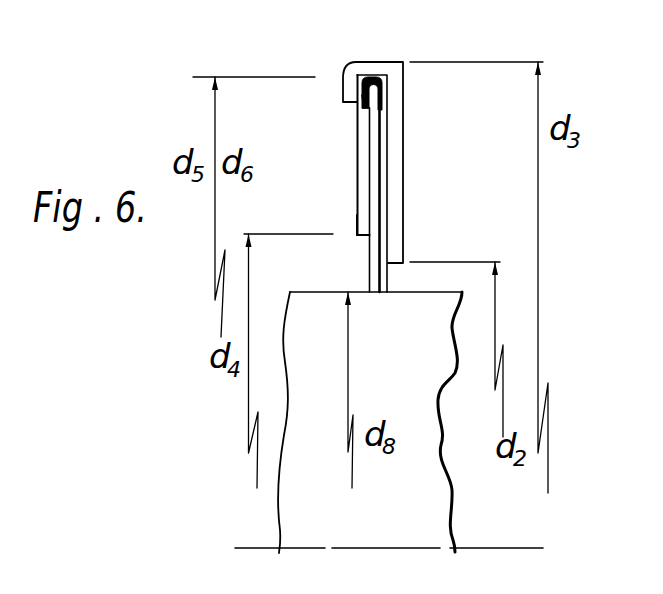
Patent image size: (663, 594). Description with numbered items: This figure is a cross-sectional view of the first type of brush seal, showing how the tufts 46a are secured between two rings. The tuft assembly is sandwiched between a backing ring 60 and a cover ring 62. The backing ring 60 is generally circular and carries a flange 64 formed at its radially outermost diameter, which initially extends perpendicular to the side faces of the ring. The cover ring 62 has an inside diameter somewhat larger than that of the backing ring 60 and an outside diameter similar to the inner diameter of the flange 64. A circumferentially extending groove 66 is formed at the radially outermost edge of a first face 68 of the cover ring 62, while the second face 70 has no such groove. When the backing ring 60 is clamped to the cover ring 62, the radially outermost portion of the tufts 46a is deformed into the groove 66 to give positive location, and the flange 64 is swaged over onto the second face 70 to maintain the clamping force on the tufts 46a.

The backing ring 60 is at (401, 113).
The cover ring 62 is at (362, 160).
The flange 64 is at (352, 66).
The circumferentially extending groove 66 is at (363, 97).
The first face 68 is at (372, 190).
The second face 70 is at (355, 222).
The tufts 46a is at (370, 253).